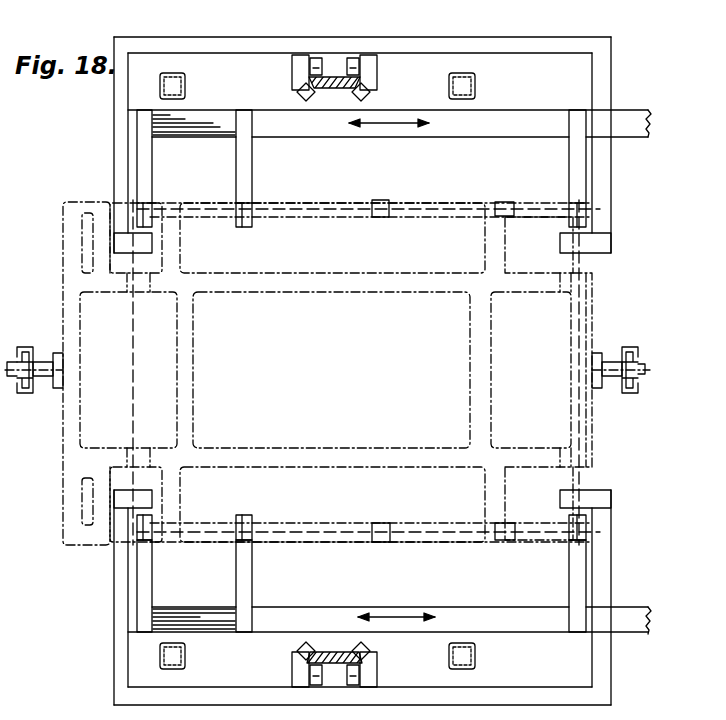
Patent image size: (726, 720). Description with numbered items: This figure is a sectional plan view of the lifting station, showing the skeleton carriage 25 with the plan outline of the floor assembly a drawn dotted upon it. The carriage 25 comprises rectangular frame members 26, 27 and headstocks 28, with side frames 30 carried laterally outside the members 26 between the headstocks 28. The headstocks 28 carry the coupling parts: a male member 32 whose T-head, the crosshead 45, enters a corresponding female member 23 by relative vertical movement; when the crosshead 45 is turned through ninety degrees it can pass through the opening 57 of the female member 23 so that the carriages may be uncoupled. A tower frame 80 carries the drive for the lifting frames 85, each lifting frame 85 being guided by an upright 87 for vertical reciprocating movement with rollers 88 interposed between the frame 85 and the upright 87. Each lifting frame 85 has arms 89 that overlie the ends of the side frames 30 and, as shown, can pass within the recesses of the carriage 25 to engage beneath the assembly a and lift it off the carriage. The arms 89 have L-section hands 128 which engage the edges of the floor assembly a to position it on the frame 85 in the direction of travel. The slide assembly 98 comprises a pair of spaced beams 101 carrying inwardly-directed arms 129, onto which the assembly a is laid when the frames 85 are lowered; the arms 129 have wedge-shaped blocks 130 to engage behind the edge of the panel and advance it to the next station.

The female member 23 is at (26, 393).
The skeleton carriage 25 is at (592, 303).
The rectangular frame member 26 is at (355, 456).
The rectangular frame member 27 is at (193, 362).
The headstock 28 is at (63, 480).
The side frame 30 is at (335, 213).
The male member 32 is at (43, 362).
The crosshead 45 is at (25, 347).
The opening 57 is at (642, 378).
The tower frame 80 is at (172, 73).
The lifting frame 85 is at (523, 46).
The upright 87 is at (334, 76).
The rollers 88 is at (301, 99).
The arms 89 is at (118, 147).
The slide assembly 98 is at (458, 614).
The beam 101 is at (627, 122).
The L-section hand 128 is at (146, 242).
The inwardly-directed arm 129 is at (145, 178).
The wedge-shaped block 130 is at (143, 520).
The floor assembly a is at (583, 350).